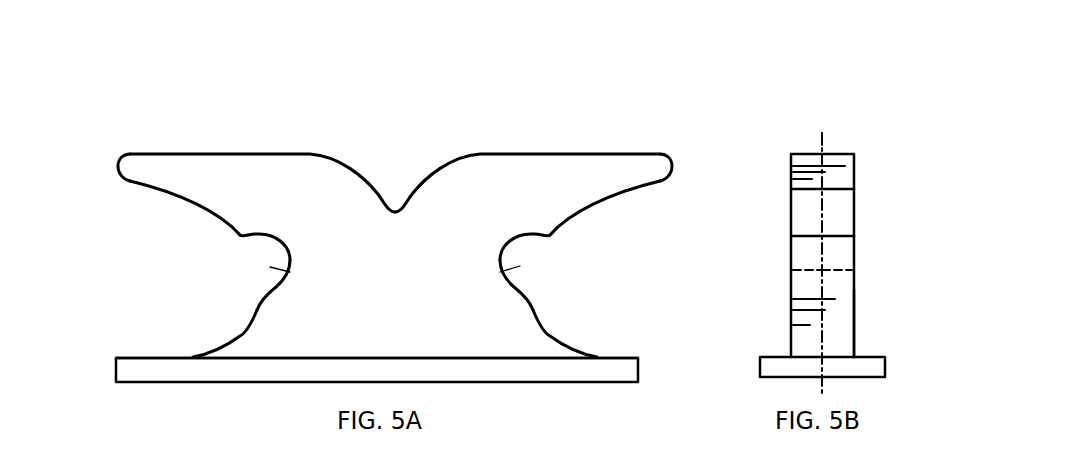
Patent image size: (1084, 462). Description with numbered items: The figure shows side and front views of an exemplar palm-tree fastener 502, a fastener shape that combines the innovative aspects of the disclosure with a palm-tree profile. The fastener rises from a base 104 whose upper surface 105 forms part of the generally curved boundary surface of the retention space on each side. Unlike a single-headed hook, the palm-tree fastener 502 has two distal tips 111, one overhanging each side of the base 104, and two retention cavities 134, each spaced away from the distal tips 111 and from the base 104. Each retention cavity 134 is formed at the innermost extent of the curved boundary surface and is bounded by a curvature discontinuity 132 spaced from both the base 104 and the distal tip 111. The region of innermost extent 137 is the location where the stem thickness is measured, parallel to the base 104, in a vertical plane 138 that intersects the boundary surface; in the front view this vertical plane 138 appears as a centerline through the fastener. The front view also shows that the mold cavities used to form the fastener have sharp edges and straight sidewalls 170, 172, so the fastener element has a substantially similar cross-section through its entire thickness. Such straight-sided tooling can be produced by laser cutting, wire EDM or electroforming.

In FIG. 5A, the palm-tree fastener 502 is at (569, 128).
In FIG. 5A, the distal tip 111 is at (117, 167).
In FIG. 5B, the distal tip 111 is at (845, 172).
In FIG. 5A, the curvature discontinuity 132 is at (560, 235).
In FIG. 5B, the curvature discontinuity 132 is at (846, 234).
In FIG. 5A, the region of innermost extent 137 is at (290, 258).
In FIG. 5B, the region of innermost extent 137 is at (845, 270).
In FIG. 5A, the retention cavity 134 is at (288, 274).
In FIG. 5B, the retention cavity 134 is at (805, 255).
In FIG. 5A, the upper surface of base 105 is at (637, 343).
In FIG. 5A, the base 104 is at (618, 372).
In FIG. 5B, the vertical plane 138 is at (822, 138).
In FIG. 5B, the sidewall 172 is at (791, 230).
In FIG. 5B, the sidewall 170 is at (854, 338).